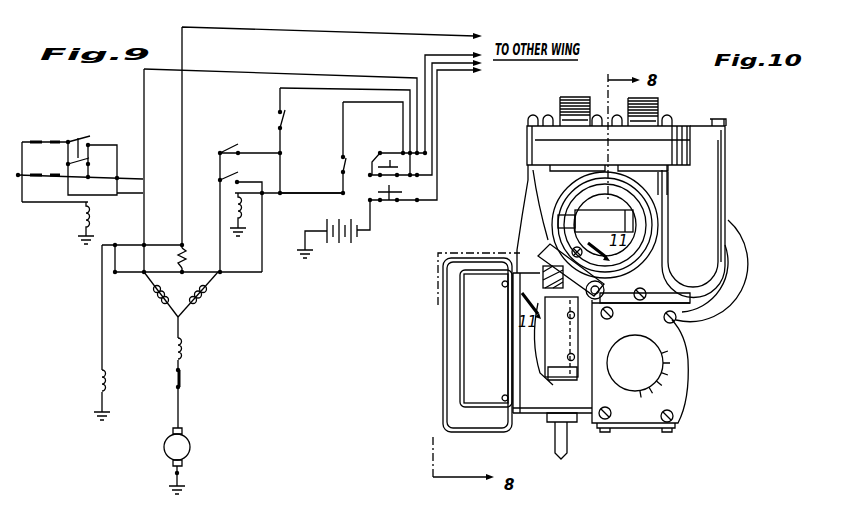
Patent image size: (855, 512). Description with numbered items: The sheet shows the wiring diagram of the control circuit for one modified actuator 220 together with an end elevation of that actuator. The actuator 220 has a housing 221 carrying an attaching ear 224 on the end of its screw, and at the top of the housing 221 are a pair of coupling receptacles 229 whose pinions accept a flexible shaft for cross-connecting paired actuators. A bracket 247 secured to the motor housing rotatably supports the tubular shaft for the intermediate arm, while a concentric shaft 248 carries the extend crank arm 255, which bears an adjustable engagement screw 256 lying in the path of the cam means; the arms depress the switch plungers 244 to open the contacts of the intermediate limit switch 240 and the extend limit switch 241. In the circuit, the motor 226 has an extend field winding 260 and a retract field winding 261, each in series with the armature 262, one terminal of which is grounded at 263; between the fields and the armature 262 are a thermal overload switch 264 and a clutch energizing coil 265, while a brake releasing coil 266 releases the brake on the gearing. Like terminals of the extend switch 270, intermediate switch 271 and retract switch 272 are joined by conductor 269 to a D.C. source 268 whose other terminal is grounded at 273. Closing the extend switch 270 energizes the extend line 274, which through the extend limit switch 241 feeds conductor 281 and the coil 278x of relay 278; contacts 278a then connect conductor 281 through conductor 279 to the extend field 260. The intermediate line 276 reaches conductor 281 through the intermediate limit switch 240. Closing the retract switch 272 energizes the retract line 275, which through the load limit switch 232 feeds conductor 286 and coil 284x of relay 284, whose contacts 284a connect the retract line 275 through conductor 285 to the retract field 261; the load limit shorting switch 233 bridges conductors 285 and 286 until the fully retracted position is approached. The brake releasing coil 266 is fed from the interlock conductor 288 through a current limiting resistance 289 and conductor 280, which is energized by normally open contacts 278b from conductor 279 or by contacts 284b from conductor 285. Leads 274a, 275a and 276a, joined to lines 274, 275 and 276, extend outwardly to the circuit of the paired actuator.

In FIG. 10, the actuator 220 is at (682, 401).
In FIG. 10, the housing 221 is at (687, 163).
In FIG. 10, the attaching ear 224 is at (630, 211).
In FIG. 9, the motor 226 is at (186, 422).
In FIG. 10, the coupling receptacles 229 is at (590, 95).
In FIG. 9, the load limit switch 232 is at (51, 173).
In FIG. 9, the load limit shorting switch 233 is at (43, 136).
In FIG. 9, the intermediate limit switch 240 is at (277, 119).
In FIG. 9, the extend limit switch 241 is at (338, 163).
In FIG. 10, the extend limit switch 241 is at (553, 362).
In FIG. 10, the switch plungers 244 is at (545, 318).
In FIG. 10, the bracket 247 is at (638, 366).
In FIG. 10, the shaft 248 is at (686, 331).
In FIG. 10, the extend crank arm 255 is at (512, 290).
In FIG. 10, the adjustable engagement screws 256 is at (540, 250).
In FIG. 9, the extend field winding 260 is at (210, 303).
In FIG. 9, the retract field winding 261 is at (157, 305).
In FIG. 9, the motor armature 262 is at (186, 452).
In FIG. 9, the ground 263 is at (189, 488).
In FIG. 9, the thermal overload switch 264 is at (188, 382).
In FIG. 9, the clutch energizing coil 265 is at (188, 352).
In FIG. 9, the brake releasing coil 266 is at (105, 386).
In FIG. 9, the source of D. C. power 268 is at (347, 250).
In FIG. 9, the conductor 269 is at (373, 230).
In FIG. 9, the extend switch 270 is at (387, 148).
In FIG. 9, the intermediate switch 271 is at (380, 150).
In FIG. 9, the retract switch 272 is at (391, 200).
In FIG. 9, the ground 273 is at (316, 252).
In FIG. 9, the extend line 274 is at (374, 102).
In FIG. 9, the lead 274a is at (425, 98).
In FIG. 9, the retract line 275 is at (243, 71).
In FIG. 9, the lead 275a is at (437, 177).
In FIG. 9, the intermediate line 276 is at (332, 88).
In FIG. 9, the lead 276a is at (432, 143).
In FIG. 9, the relay 278 is at (218, 178).
In FIG. 9, the relay contacts 278a is at (240, 133).
In FIG. 9, the normally open contacts 278b is at (235, 175).
In FIG. 9, the relay coil 278x is at (246, 197).
In FIG. 9, the conductor 279 is at (220, 218).
In FIG. 9, the conductor 280 is at (255, 275).
In FIG. 9, the conductor 281 is at (254, 195).
In FIG. 9, the relay 284 is at (97, 140).
In FIG. 9, the relay contacts 284a is at (77, 138).
In FIG. 9, the normally open contacts 284b is at (95, 161).
In FIG. 9, the relay coil 284x is at (78, 228).
In FIG. 9, the conductor 285 is at (151, 218).
In FIG. 9, the conductor 286 is at (60, 206).
In FIG. 9, the interlock conductor 288 is at (181, 118).
In FIG. 9, the current limiting resistance 289 is at (188, 257).